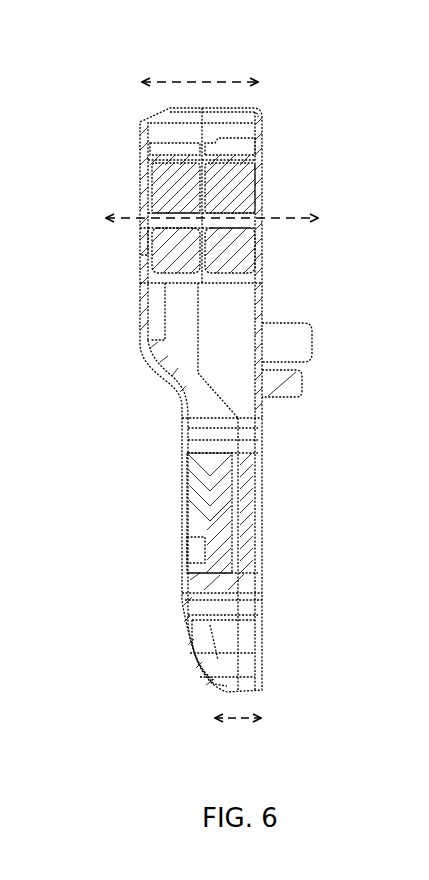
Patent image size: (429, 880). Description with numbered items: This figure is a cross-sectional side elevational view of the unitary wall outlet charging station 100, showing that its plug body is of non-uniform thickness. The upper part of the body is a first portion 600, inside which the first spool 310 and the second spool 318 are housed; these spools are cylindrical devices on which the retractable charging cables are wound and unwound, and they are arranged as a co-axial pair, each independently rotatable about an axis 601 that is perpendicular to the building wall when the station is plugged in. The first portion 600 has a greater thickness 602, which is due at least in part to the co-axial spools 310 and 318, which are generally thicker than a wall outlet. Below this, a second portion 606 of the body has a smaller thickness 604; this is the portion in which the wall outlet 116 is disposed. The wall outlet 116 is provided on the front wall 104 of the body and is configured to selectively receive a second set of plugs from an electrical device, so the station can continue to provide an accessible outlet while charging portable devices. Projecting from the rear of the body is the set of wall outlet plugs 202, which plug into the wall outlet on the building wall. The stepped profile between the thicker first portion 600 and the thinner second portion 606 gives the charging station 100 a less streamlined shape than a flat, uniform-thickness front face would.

The unitary wall outlet charging station 100 is at (240, 791).
The front wall 104 is at (140, 243).
The wall outlet 116 is at (180, 548).
The set of wall outlet plugs 202 is at (324, 344).
The first spool 310 is at (173, 190).
The second spool 318 is at (243, 192).
The first portion 600 is at (128, 294).
The axis 601 is at (290, 218).
The greater thickness 602 is at (202, 82).
The thickness 604 is at (233, 718).
The second portion 606 is at (145, 602).